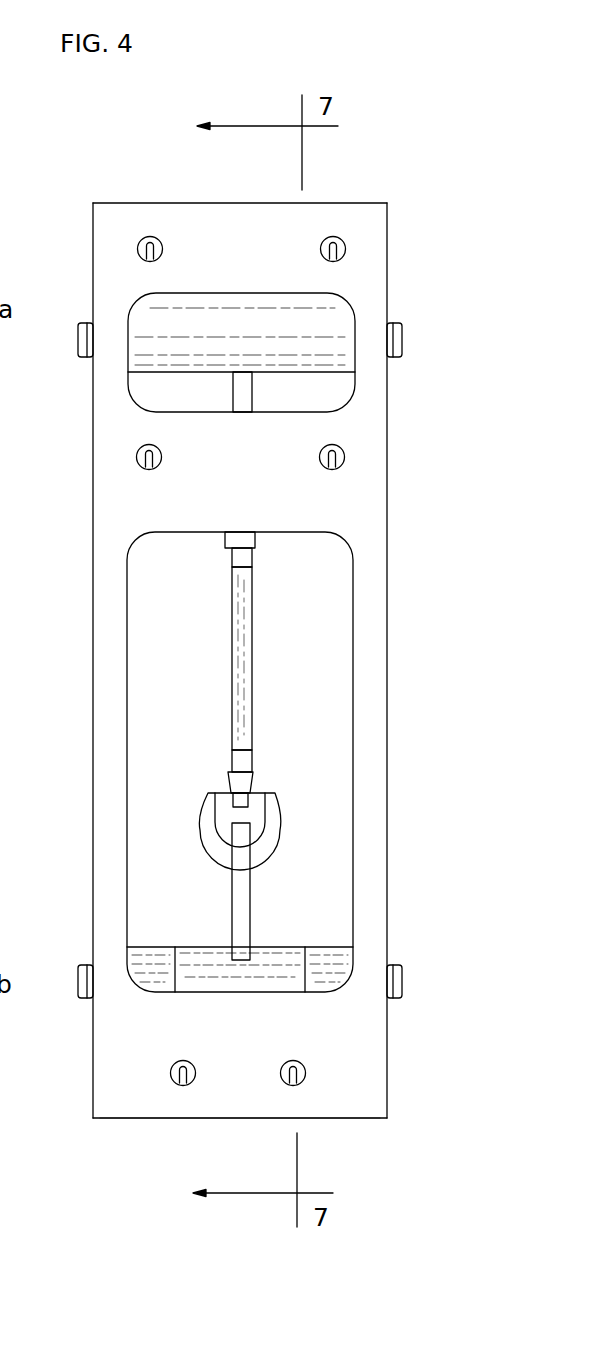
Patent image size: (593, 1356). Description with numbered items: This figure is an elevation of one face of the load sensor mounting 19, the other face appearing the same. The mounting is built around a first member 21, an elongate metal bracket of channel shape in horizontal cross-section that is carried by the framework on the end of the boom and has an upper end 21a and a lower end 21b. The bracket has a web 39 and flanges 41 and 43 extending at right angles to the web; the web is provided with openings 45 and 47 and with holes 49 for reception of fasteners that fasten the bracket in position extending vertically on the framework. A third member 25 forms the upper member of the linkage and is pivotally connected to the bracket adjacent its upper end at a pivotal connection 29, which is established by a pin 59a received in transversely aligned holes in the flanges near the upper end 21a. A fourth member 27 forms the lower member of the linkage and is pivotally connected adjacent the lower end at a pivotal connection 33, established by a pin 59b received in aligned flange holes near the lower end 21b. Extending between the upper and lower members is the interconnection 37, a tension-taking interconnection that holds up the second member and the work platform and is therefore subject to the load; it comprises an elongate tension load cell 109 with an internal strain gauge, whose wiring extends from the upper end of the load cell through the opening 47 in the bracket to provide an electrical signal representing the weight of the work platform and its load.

The load sensor mounting 19 is at (229, 692).
The first member 21 is at (229, 671).
The upper end of first member 21a is at (355, 202).
The lower end of first member 21b is at (111, 1120).
The third member 25 is at (236, 368).
The fourth member 27 is at (180, 937).
The pivotal connection 29 is at (77, 337).
The pivotal connection 33 is at (77, 978).
The interconnection 37 is at (248, 652).
The web 39 is at (203, 1107).
The flange 41 is at (382, 565).
The flange 43 is at (92, 670).
The opening 45 is at (308, 375).
The opening 47 is at (145, 786).
The holes 49 is at (322, 258).
The pin 59a is at (403, 342).
The pin 59b is at (402, 982).
The tension load cell 109 is at (237, 608).